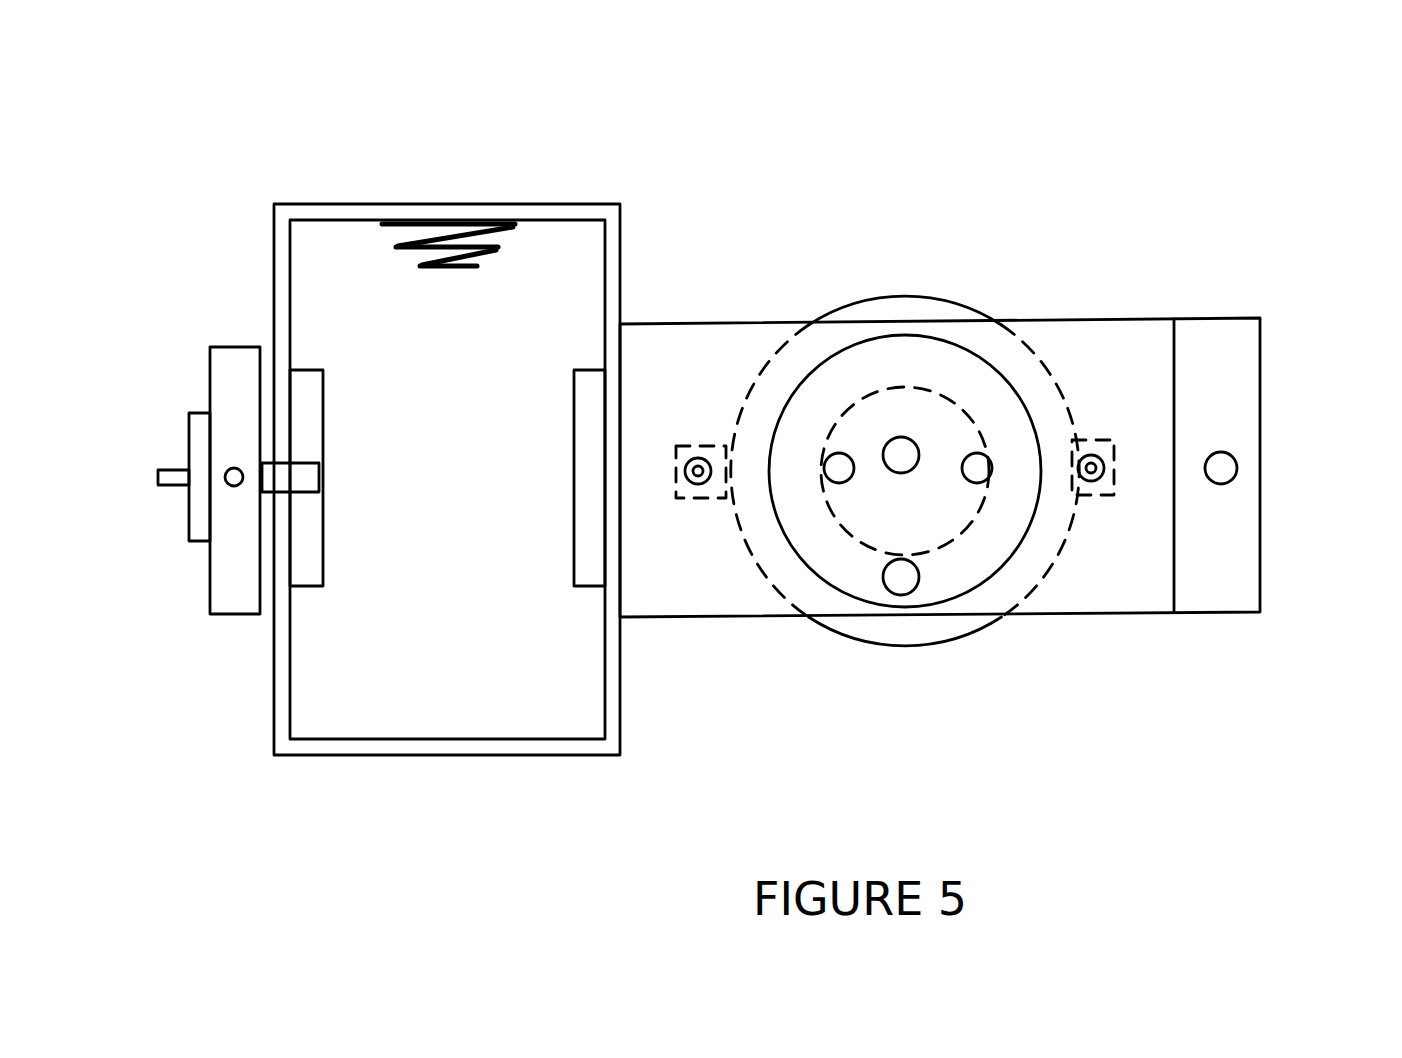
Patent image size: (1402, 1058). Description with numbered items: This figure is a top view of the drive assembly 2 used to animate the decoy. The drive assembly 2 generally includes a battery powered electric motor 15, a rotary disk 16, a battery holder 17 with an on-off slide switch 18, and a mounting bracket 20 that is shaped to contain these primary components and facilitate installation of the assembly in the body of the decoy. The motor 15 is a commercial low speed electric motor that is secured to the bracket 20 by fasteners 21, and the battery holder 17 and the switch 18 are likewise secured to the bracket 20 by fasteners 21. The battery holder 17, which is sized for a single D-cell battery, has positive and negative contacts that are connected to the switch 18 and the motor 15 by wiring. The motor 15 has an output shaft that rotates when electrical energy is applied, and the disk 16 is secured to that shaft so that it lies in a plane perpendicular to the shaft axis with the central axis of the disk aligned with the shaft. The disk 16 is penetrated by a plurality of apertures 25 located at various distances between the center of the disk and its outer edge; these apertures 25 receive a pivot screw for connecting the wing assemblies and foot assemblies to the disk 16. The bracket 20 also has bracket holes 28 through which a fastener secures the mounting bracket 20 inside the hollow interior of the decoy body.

The drive assembly 2 is at (636, 634).
The electric motor 15 is at (930, 628).
The rotary disk 16 is at (858, 570).
The battery holder 17 is at (377, 212).
The on-off slide switch 18 is at (195, 438).
The mounting bracket 20 is at (1210, 340).
The fasteners 21 is at (693, 468).
The apertures 25 is at (903, 577).
The bracket holes 28 is at (1222, 472).